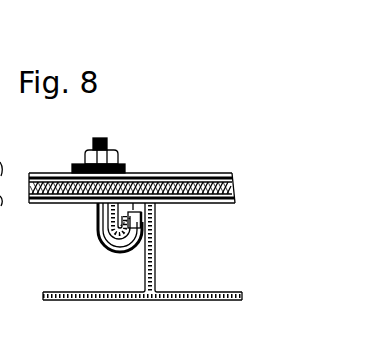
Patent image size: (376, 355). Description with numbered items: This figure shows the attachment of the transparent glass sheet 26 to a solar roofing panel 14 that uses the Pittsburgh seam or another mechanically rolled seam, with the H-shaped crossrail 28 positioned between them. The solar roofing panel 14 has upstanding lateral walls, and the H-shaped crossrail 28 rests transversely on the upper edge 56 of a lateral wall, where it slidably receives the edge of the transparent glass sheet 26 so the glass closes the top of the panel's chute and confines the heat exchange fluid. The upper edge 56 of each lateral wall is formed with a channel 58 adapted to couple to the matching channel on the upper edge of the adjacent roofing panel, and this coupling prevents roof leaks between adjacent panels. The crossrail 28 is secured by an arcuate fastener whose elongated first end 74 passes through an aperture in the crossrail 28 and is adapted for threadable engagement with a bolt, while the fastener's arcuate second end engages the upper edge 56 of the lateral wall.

The solar roofing panel 14 is at (95, 300).
The transparent glass sheet 26 is at (185, 177).
The H-shaped crossrail 28 is at (230, 203).
The upper edge 56 is at (151, 210).
The channel 58 is at (133, 207).
The elongated first end 74 is at (92, 139).